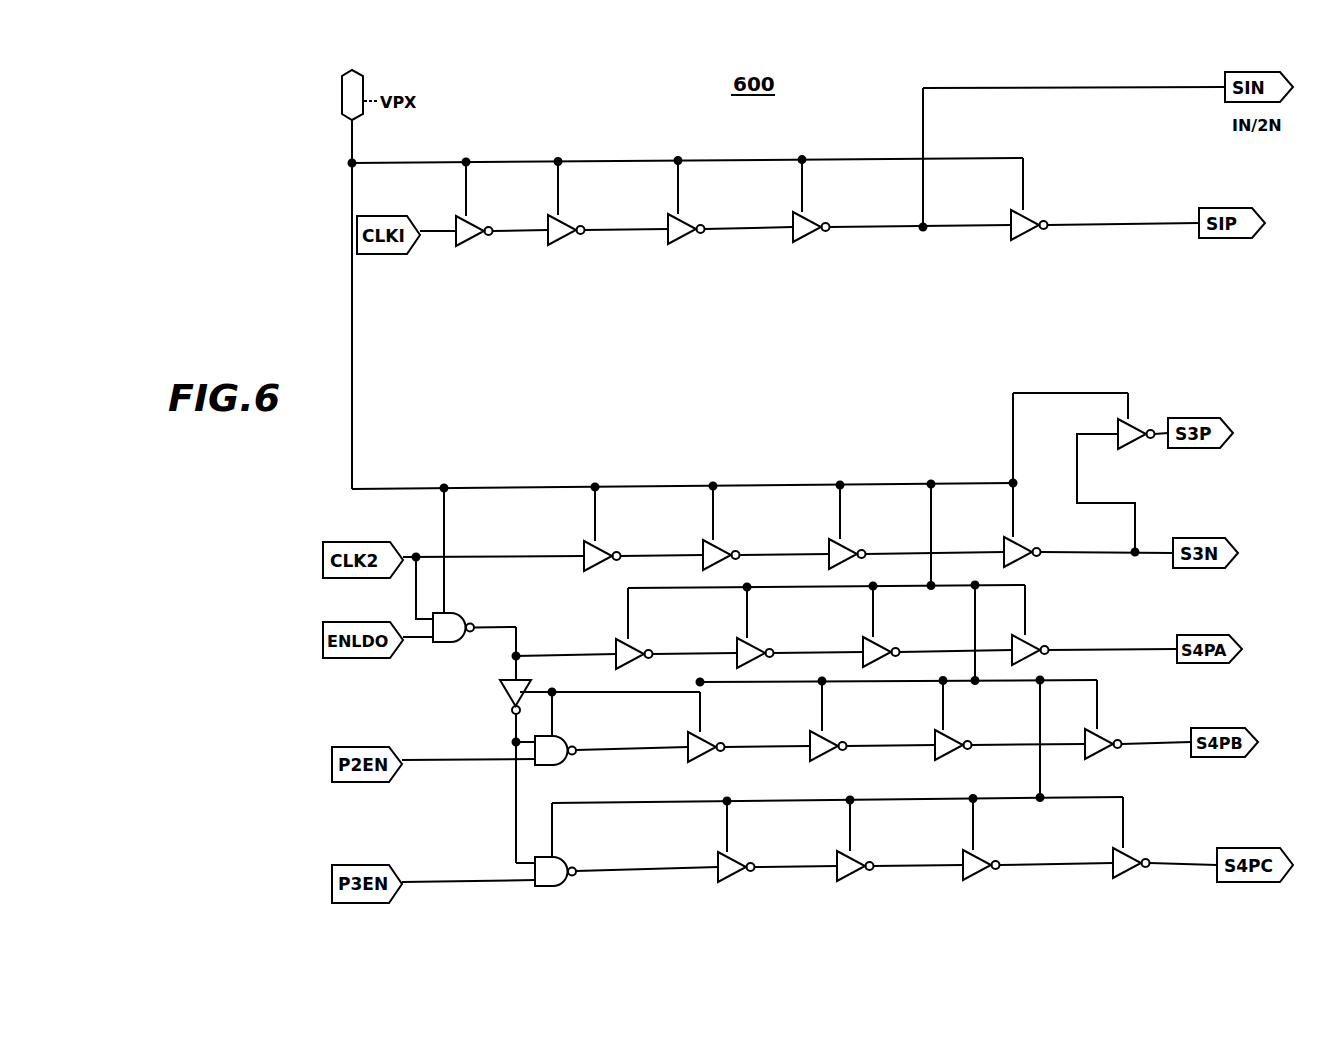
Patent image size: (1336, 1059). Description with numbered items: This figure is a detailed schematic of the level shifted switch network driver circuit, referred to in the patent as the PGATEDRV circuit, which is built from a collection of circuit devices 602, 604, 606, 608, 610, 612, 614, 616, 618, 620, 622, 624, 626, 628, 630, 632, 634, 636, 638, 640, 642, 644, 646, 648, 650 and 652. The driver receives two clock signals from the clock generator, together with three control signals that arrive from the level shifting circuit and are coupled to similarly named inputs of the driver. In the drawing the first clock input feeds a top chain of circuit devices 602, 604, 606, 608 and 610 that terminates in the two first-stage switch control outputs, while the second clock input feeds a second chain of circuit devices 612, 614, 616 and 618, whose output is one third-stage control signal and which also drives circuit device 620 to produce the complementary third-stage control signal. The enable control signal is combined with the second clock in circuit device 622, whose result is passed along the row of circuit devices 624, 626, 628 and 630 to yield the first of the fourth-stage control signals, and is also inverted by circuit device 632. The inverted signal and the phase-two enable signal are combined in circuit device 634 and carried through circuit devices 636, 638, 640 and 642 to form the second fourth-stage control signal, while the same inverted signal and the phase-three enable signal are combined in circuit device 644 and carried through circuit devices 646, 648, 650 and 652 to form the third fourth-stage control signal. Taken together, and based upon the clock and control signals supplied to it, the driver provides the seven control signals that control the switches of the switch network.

The circuit device 602 is at (472, 233).
The circuit device 604 is at (564, 232).
The circuit device 606 is at (684, 231).
The circuit device 608 is at (809, 229).
The circuit device 610 is at (1027, 227).
The circuit device 612 is at (606, 548).
The circuit device 614 is at (724, 547).
The circuit device 616 is at (850, 546).
The circuit device 618 is at (1024, 545).
The circuit device 620 is at (1132, 436).
The circuit device 622 is at (449, 636).
The circuit device 624 is at (638, 647).
The circuit device 626 is at (758, 646).
The circuit device 628 is at (884, 645).
The circuit device 630 is at (1033, 643).
The circuit device 632 is at (503, 705).
The circuit device 634 is at (560, 739).
The circuit device 636 is at (708, 740).
The circuit device 638 is at (828, 739).
The circuit device 640 is at (953, 738).
The circuit device 642 is at (1103, 736).
The circuit device 644 is at (558, 875).
The circuit device 646 is at (737, 861).
The circuit device 648 is at (856, 860).
The circuit device 650 is at (982, 858).
The circuit device 652 is at (1131, 856).